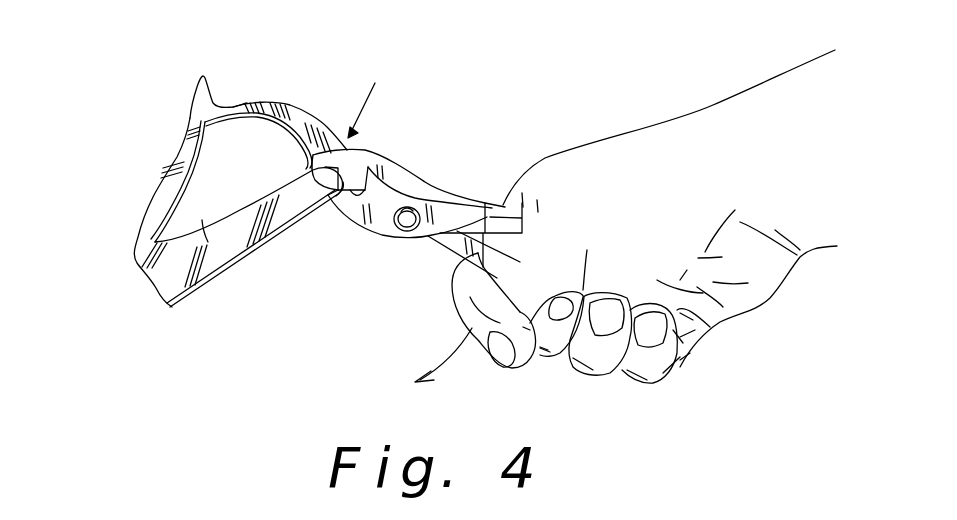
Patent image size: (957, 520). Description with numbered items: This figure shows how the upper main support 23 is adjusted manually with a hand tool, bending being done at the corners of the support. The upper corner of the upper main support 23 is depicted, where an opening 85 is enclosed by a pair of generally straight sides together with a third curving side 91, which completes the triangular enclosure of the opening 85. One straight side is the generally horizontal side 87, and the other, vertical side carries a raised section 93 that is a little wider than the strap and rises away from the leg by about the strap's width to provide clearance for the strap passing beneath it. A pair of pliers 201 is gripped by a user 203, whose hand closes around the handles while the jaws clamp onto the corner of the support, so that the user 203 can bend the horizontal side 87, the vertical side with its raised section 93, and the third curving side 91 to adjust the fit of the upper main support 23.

The upper main support 23 is at (143, 160).
The opening 85 is at (234, 252).
The horizontal side 87 is at (295, 103).
The third curving side 91 is at (192, 182).
The raised section 93 is at (258, 228).
The pliers 201 is at (409, 167).
The user 203 is at (626, 148).